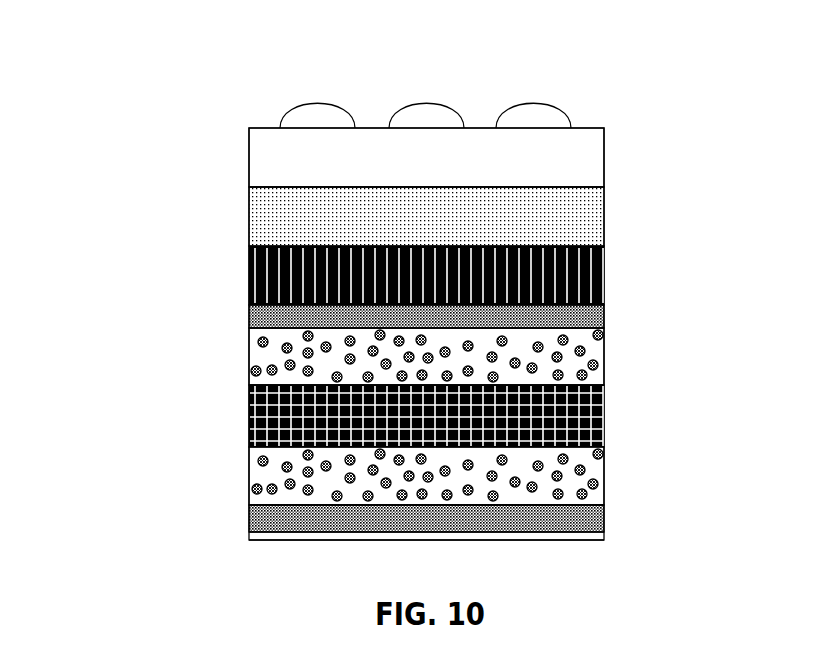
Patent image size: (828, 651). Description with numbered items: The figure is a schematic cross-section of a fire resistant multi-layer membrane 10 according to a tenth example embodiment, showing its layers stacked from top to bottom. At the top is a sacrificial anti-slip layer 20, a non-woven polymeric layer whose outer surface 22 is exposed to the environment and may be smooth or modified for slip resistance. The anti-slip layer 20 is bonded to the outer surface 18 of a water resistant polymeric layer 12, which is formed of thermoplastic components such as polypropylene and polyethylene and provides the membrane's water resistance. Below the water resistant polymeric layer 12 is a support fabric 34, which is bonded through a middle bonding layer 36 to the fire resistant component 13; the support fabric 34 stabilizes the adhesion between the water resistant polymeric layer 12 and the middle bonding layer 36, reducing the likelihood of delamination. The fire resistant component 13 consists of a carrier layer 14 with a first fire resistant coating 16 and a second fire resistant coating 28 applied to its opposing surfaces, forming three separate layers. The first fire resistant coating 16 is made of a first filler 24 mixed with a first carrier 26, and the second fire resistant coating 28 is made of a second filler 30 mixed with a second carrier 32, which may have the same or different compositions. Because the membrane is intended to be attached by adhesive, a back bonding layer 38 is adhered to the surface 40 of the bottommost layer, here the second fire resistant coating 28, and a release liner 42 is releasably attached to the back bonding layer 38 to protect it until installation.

The multi-layer membrane 10 is at (200, 81).
The water resistant polymeric layer 12 is at (249, 221).
The fire resistant component 13 is at (143, 430).
The carrier layer 14 is at (605, 410).
The first fire resistant coating 16 is at (605, 358).
The outer surface 18 is at (604, 187).
The anti-slip layer 20 is at (249, 165).
The outer surface 22 is at (573, 128).
The first filler 24 is at (252, 372).
The first carrier 26 is at (262, 383).
The second fire resistant coating 28 is at (605, 475).
The second filler 30 is at (260, 463).
The second carrier 32 is at (270, 500).
The support fabric 34 is at (605, 282).
The middle bonding layer 36 is at (249, 319).
The back bonding layer 38 is at (605, 518).
The surface 40 is at (363, 532).
The release liner 42 is at (605, 528).